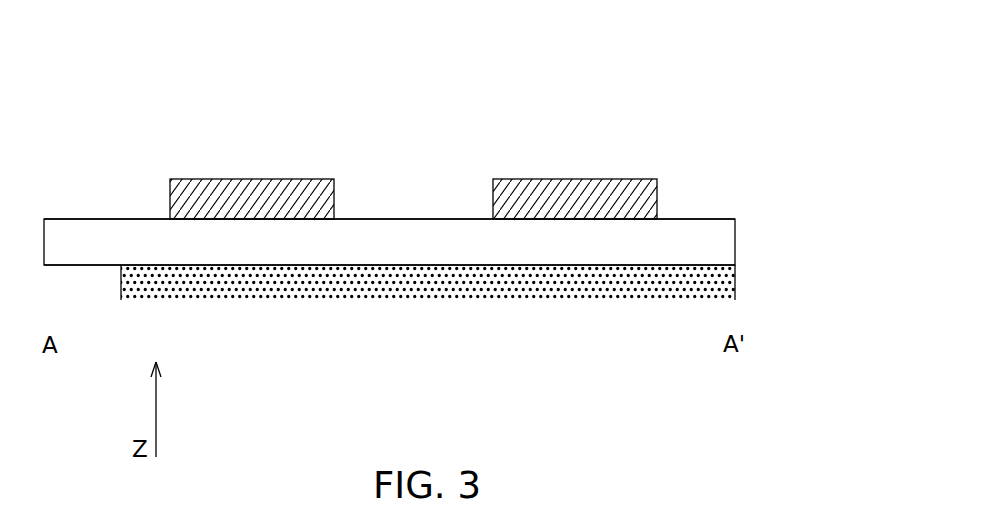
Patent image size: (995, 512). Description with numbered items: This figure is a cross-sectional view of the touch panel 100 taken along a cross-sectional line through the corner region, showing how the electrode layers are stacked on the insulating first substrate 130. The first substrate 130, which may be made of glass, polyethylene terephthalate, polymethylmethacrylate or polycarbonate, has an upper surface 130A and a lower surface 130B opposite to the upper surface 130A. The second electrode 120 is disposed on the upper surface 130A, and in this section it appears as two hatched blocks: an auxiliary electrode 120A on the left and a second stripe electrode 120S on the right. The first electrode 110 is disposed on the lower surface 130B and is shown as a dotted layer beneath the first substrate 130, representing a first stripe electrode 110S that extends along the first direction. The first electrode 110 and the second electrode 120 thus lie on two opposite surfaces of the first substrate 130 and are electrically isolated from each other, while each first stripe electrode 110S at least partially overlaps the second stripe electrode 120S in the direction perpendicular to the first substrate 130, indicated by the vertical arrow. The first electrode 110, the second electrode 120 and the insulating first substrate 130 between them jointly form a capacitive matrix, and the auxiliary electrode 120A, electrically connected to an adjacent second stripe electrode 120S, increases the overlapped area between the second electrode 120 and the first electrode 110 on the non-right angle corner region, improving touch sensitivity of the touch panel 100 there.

The touch panel 100 is at (662, 83).
The first electrode 110 is at (428, 314).
The first stripe electrode 110S is at (413, 283).
The second electrode 120 is at (413, 168).
The auxiliary electrode 120A is at (245, 193).
The second stripe electrode 120S is at (583, 193).
The first substrate 130 is at (710, 243).
The upper surface 130A is at (702, 219).
The lower surface 130B is at (705, 266).